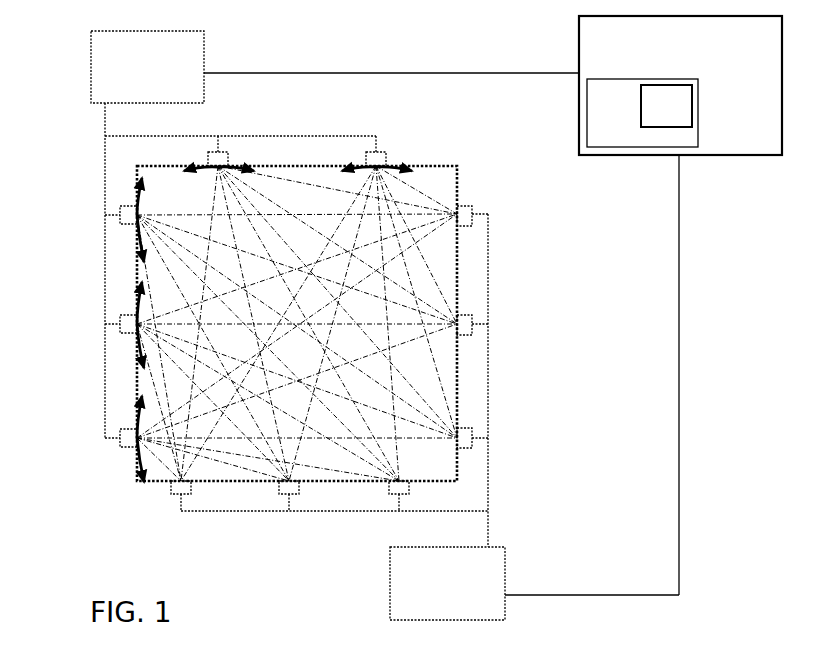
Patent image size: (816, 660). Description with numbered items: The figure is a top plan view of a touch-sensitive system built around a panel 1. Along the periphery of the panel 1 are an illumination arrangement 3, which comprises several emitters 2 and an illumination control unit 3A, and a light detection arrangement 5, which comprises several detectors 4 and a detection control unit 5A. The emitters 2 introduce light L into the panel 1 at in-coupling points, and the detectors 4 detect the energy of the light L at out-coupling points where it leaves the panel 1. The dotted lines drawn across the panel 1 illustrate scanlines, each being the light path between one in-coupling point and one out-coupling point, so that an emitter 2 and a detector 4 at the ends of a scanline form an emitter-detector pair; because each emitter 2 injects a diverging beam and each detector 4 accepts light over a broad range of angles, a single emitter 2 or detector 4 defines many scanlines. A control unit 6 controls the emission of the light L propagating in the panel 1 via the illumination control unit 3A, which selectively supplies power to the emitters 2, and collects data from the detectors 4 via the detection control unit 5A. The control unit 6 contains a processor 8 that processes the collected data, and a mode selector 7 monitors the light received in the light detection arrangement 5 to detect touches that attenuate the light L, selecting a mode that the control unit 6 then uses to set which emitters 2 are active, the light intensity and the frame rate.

The panel 1 is at (442, 182).
The emitter 2 is at (226, 156).
The illumination arrangement 3 is at (76, 116).
The illumination control unit 3A is at (204, 62).
The detector 4 is at (470, 210).
The light detection arrangement 5 is at (322, 562).
The detection control unit 5A is at (505, 580).
The control unit 6 is at (740, 146).
The mode selector 7 is at (616, 138).
The processor 8 is at (670, 94).
The light L is at (190, 168).